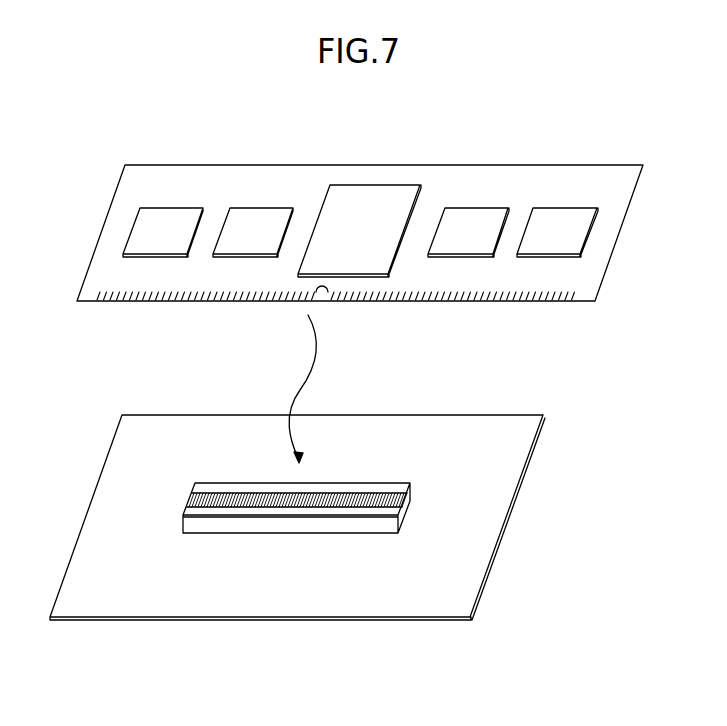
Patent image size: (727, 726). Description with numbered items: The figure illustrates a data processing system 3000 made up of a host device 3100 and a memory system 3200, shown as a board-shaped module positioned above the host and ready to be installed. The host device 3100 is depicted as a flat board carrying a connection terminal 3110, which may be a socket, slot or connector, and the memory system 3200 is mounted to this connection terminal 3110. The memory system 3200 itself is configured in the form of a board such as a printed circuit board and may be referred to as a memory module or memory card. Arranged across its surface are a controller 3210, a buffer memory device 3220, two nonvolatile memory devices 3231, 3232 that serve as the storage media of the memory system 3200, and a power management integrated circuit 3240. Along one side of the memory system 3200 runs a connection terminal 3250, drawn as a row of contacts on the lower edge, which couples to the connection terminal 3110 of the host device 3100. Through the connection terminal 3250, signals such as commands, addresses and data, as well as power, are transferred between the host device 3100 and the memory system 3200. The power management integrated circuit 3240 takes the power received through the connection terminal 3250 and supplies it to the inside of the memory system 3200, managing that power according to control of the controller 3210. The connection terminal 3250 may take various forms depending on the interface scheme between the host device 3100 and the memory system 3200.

The data processing system 3000 is at (218, 133).
The memory system 3200 is at (360, 253).
The controller 3210 is at (359, 231).
The buffer memory device 3220 is at (253, 232).
The power management integrated circuit 3240 is at (163, 232).
The nonvolatile memory device 3231 is at (468, 232).
The nonvolatile memory device 3232 is at (557, 232).
The connection terminal 3250 is at (112, 302).
The host device 3100 is at (297, 517).
The connection terminal 3110 is at (427, 478).